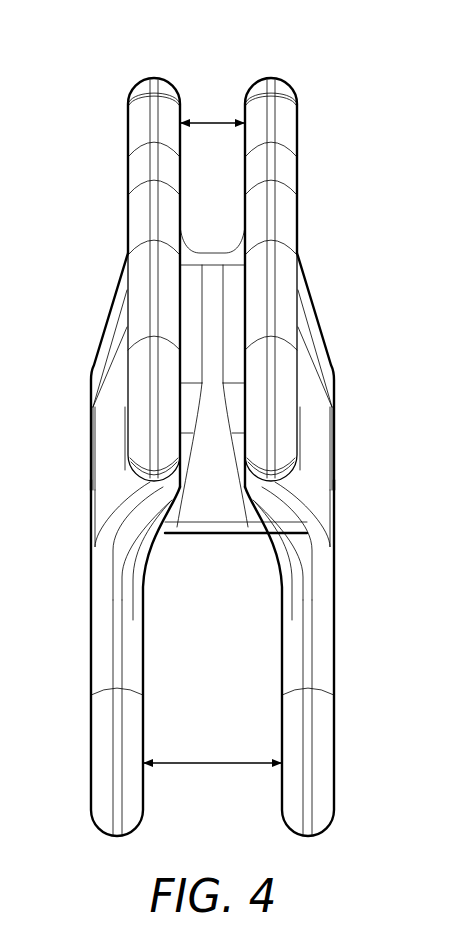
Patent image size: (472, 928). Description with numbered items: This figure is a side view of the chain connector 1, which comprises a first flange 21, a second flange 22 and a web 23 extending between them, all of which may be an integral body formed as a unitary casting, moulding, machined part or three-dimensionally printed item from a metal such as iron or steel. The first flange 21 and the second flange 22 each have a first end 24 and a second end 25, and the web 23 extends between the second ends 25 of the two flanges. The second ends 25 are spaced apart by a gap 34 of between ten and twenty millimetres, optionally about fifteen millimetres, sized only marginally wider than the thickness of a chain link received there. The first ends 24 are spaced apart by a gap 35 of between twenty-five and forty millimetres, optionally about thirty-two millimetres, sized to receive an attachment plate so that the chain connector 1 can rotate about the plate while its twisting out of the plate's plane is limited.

The chain connector 1 is at (226, 427).
The first flange 21 is at (345, 601).
The second flange 22 is at (80, 599).
The web 23 is at (213, 508).
The first end 24 is at (226, 658).
The second end 25 is at (236, 301).
The gap 34 is at (213, 120).
The gap 35 is at (213, 766).